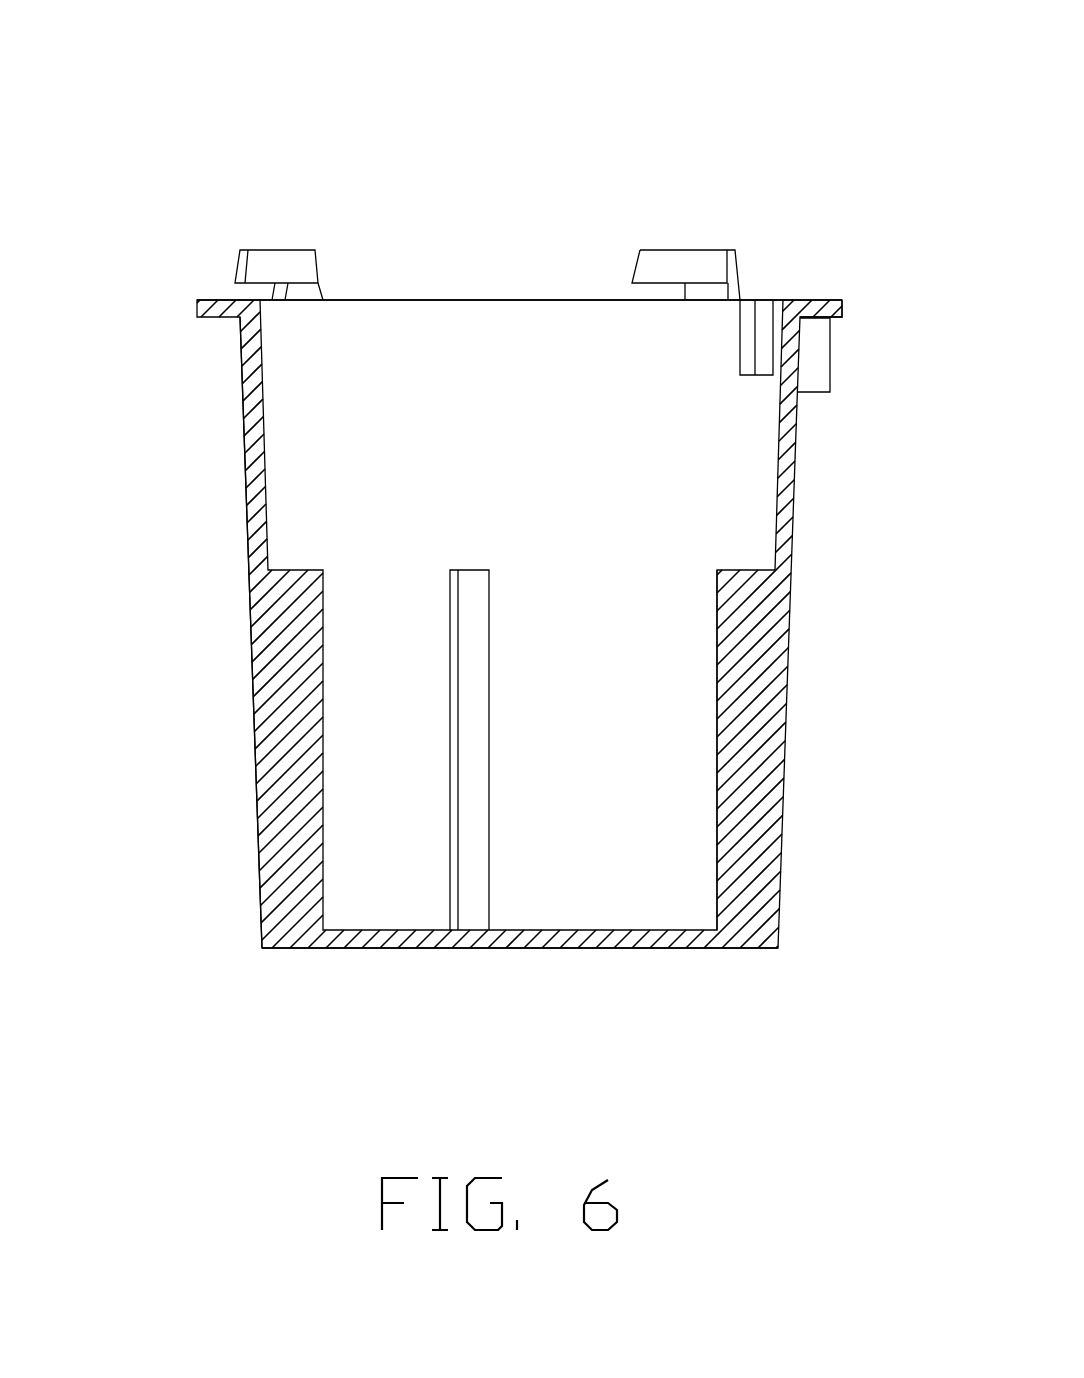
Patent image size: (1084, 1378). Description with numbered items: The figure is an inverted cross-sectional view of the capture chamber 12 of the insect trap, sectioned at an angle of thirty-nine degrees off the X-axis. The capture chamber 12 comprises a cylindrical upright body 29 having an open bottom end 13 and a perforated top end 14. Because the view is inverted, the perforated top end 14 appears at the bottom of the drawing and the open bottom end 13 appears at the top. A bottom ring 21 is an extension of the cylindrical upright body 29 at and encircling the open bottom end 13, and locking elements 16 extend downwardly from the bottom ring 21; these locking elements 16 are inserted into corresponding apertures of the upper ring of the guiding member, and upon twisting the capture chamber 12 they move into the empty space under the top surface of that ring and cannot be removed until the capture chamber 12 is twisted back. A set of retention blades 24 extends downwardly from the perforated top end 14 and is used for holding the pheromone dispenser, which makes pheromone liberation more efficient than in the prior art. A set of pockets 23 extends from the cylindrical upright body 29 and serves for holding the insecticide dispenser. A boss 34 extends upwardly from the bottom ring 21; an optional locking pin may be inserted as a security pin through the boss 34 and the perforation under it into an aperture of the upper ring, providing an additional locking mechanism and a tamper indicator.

The capture chamber 12 is at (519, 482).
The open bottom end 13 is at (519, 163).
The perforated top end 14 is at (520, 1033).
The locking elements 16 is at (696, 163).
The bottom ring 21 is at (883, 241).
The set of pockets 23 is at (802, 215).
The set of retention blades 24 is at (689, 743).
The cylindrical upright body 29 is at (177, 623).
The boss 34 is at (883, 404).